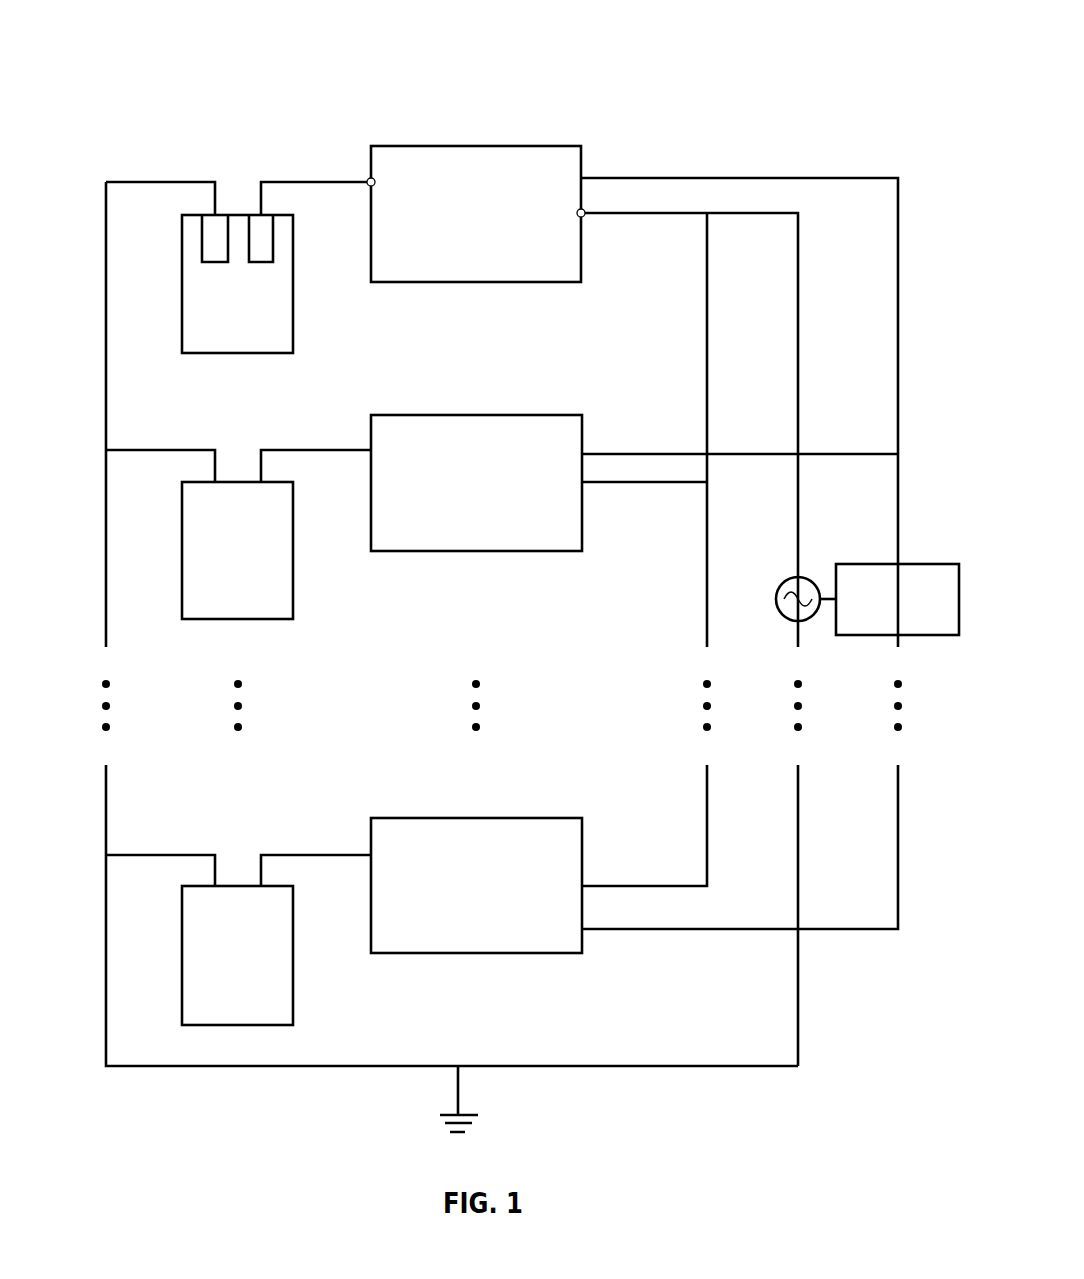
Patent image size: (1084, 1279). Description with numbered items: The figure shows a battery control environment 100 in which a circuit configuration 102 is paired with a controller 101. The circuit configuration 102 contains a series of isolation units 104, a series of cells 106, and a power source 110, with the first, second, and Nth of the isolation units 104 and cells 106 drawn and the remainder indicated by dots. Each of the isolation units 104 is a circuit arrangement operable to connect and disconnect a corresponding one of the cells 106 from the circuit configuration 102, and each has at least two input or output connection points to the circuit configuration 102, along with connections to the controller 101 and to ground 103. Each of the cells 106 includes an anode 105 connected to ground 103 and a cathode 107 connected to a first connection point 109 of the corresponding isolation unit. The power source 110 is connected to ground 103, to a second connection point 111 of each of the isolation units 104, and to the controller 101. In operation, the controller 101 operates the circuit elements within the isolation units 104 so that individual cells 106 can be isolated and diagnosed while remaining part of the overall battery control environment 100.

The battery control environment 100 is at (700, 43).
The controller 101 is at (876, 563).
The circuit configuration 102 is at (123, 137).
The ground 103 is at (461, 1104).
The isolation unit 104 is at (560, 146).
The anode 105 is at (200, 236).
The cell 106 is at (294, 313).
The cathode 107 is at (275, 236).
The first connection point 109 is at (367, 179).
The power source 110 is at (781, 581).
The second connection point 111 is at (584, 216).